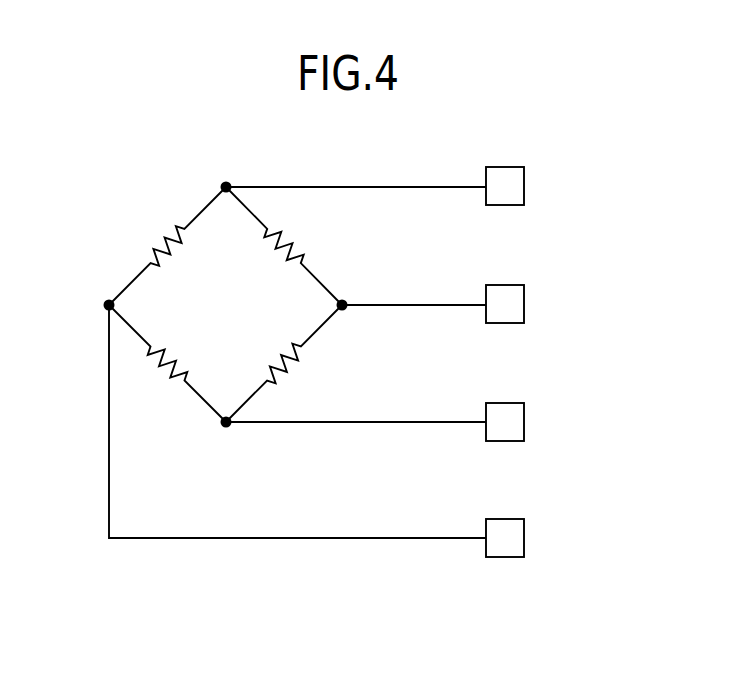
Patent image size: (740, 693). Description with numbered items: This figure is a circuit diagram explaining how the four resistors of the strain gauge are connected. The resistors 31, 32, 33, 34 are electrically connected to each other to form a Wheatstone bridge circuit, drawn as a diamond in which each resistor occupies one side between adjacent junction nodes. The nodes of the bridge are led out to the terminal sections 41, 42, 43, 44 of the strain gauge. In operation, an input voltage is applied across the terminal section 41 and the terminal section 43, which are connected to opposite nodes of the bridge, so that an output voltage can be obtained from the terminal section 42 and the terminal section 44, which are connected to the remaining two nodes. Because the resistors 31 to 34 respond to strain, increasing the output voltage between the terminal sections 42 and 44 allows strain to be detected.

The resistor 31 is at (301, 243).
The resistor 32 is at (153, 373).
The resistor 33 is at (155, 238).
The resistor 34 is at (300, 373).
The terminal section 41 is at (525, 187).
The terminal section 42 is at (525, 538).
The terminal section 43 is at (525, 422).
The terminal section 44 is at (525, 305).